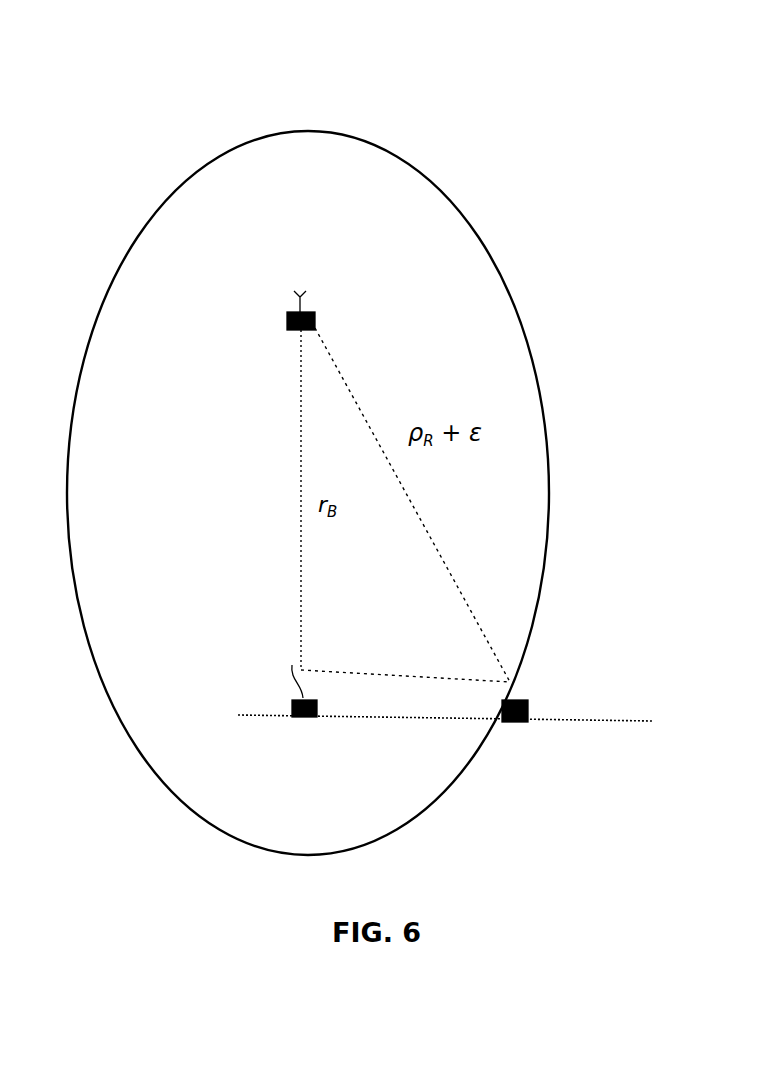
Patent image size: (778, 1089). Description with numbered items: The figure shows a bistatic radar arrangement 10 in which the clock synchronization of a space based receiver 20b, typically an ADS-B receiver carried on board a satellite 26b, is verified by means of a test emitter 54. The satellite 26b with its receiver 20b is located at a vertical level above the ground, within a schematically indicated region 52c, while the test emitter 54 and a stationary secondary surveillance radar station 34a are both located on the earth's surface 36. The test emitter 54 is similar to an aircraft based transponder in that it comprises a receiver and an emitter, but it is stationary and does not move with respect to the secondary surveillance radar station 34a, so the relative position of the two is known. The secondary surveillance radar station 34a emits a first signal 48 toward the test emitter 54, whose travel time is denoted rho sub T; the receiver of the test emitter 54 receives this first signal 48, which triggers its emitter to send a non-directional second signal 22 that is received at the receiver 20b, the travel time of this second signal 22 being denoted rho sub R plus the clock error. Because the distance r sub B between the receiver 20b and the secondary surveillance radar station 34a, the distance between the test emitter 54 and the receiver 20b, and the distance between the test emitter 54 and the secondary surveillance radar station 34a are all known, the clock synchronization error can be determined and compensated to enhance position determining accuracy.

The system 10 is at (116, 66).
The coverage region 52c is at (464, 212).
The satellite 26b is at (266, 296).
The receiver 20b is at (314, 319).
The second signal 22 is at (453, 568).
The first signal 48 is at (427, 680).
The earth surface 36 is at (606, 719).
The secondary surveillance radar station 34a is at (317, 710).
The test emitter 54 is at (528, 712).